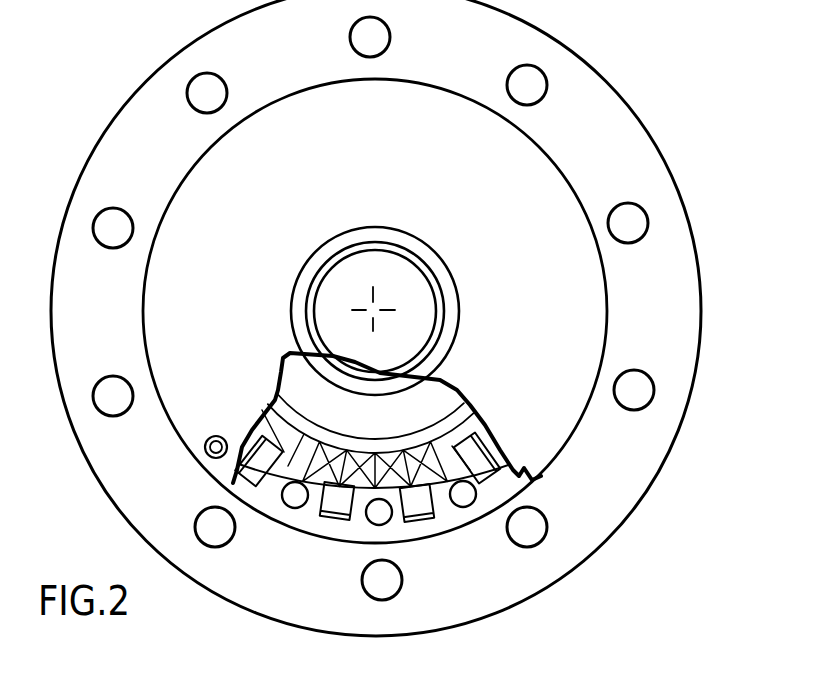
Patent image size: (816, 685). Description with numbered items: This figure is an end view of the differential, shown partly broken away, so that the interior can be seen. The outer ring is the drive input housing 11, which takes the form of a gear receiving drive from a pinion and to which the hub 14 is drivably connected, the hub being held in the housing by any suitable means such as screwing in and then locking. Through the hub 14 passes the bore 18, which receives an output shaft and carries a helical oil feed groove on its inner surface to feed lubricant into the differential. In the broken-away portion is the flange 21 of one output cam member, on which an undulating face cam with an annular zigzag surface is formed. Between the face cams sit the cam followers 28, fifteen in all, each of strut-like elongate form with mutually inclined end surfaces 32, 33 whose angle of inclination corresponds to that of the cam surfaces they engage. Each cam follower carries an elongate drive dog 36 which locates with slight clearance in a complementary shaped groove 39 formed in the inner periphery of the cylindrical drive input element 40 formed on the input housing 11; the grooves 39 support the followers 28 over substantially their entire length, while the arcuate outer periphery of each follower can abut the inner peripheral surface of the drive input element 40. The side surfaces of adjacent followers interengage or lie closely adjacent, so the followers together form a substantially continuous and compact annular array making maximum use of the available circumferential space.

The drive input housing 11 is at (643, 148).
The hub 14 is at (542, 274).
The bore 18 is at (458, 313).
The flange 21 is at (380, 419).
The cam follower 28 is at (296, 441).
The end surface 32 is at (400, 448).
The end surface 33 is at (458, 437).
The drive dog 36 is at (543, 477).
The groove 39 is at (340, 520).
The drive input element 40 is at (233, 483).